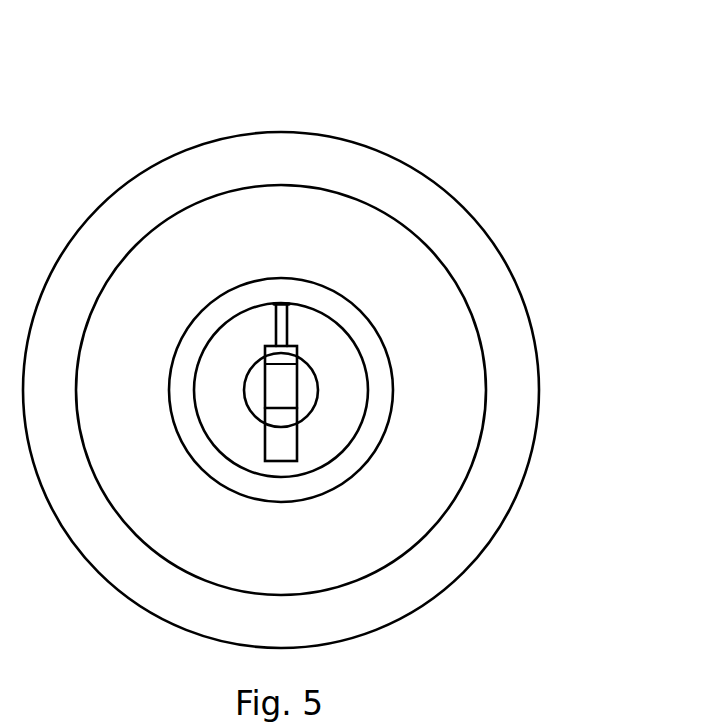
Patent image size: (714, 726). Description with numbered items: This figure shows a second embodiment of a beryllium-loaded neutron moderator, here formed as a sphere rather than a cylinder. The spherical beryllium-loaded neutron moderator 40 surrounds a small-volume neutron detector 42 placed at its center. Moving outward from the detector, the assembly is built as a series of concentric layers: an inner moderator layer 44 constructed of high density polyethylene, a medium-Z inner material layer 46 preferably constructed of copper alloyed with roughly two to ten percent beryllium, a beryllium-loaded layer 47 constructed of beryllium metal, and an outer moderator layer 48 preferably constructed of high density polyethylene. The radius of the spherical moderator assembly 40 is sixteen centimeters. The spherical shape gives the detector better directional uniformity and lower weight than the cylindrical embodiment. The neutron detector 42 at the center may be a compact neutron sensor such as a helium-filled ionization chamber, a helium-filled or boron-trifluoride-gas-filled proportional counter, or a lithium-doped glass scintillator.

The endoscope distal end assembly 40 is at (285, 131).
The instrument / probe 42 is at (278, 372).
The inner lumen 44 is at (323, 342).
The inner tube wall 46 is at (378, 401).
The intermediate annular channel 47 is at (422, 455).
The outer sheath 48 is at (435, 563).